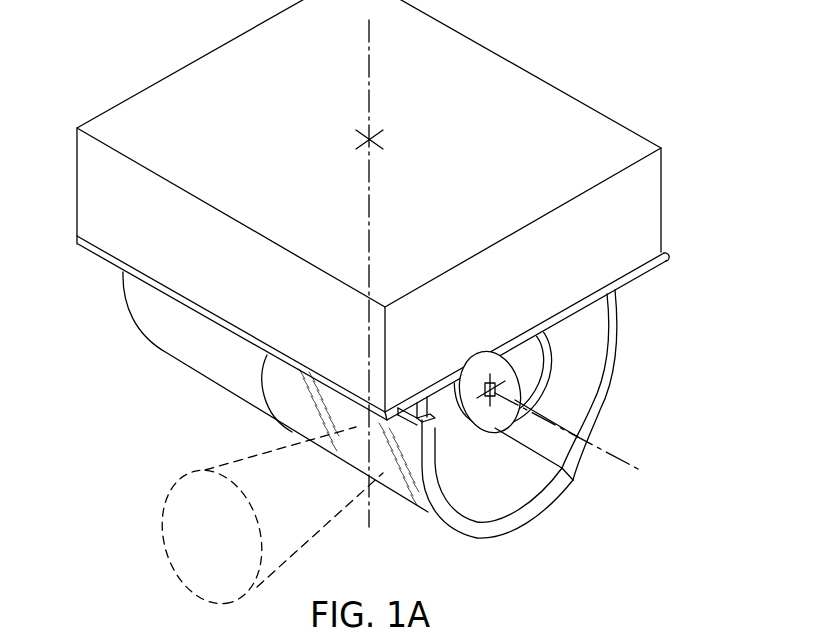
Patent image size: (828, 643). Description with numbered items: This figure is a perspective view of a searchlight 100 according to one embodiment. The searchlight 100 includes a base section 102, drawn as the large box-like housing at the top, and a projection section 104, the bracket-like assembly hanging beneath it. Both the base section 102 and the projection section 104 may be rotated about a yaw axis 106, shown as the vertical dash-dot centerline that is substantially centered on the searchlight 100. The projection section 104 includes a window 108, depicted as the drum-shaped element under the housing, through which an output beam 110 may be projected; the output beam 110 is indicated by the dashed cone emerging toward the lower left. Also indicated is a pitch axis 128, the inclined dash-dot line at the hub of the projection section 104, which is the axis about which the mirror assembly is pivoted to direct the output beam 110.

The searchlight 100 is at (385, 280).
The base section 102 is at (662, 188).
The projection section 104 is at (610, 397).
The yaw axis 106 is at (371, 89).
The window 108 is at (417, 520).
The output beam 110 is at (216, 465).
The pitch axis 128 is at (638, 478).